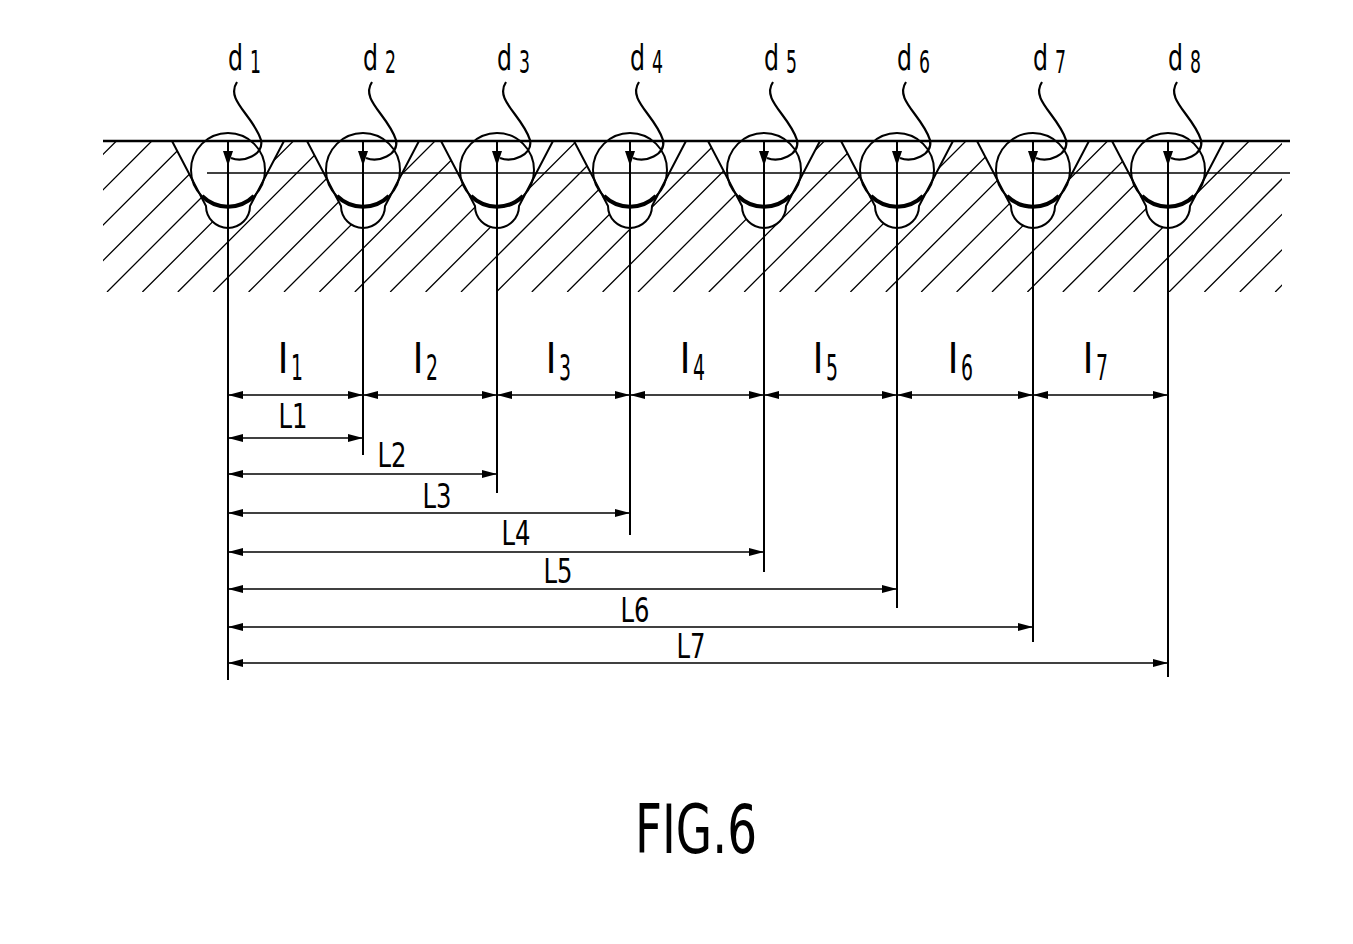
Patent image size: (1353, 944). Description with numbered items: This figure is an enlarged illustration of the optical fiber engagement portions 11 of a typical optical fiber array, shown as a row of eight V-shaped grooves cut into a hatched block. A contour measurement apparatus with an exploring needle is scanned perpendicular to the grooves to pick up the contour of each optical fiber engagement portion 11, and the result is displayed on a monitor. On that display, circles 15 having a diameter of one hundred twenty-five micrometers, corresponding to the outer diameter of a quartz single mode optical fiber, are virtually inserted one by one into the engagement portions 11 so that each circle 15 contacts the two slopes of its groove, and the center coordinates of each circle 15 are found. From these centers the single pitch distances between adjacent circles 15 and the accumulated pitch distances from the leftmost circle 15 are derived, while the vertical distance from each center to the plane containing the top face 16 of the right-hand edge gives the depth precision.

The optical fiber engagement portion 11 is at (672, 143).
The circle 15 is at (612, 137).
The top face 16 is at (1272, 160).